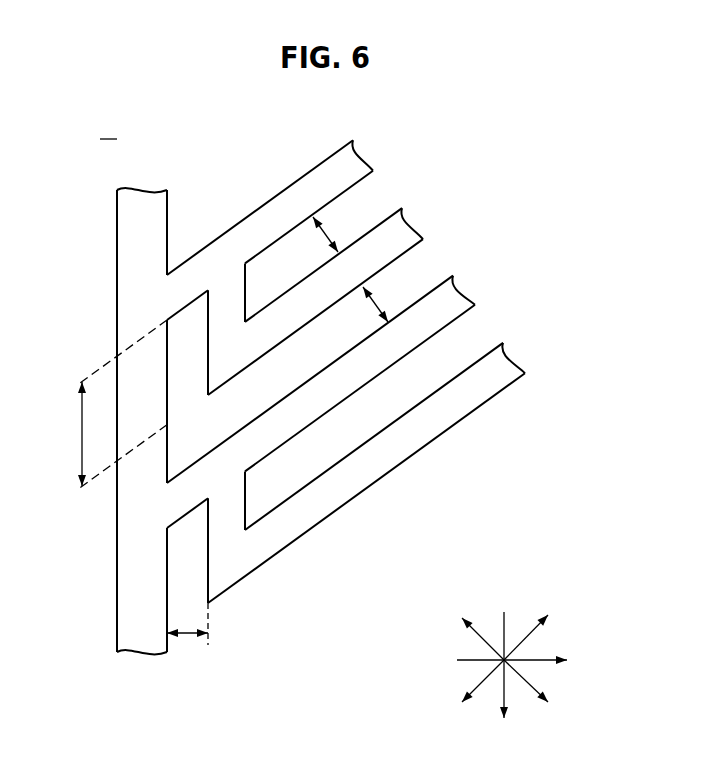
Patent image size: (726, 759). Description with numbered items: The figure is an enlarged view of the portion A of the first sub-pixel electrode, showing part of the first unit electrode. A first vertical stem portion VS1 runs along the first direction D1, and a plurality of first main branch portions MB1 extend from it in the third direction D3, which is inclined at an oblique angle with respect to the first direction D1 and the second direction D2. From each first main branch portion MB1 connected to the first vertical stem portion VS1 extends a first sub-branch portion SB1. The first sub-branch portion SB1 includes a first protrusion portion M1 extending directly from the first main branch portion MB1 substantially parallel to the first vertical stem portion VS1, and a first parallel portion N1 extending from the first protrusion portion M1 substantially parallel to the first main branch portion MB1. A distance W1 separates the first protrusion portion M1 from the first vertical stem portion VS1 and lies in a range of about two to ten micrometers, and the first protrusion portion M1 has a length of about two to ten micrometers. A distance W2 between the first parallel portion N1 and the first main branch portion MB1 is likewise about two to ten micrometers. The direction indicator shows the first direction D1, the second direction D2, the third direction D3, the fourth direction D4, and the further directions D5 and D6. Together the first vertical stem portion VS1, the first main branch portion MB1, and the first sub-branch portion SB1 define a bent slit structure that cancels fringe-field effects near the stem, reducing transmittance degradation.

The portion A is at (108, 128).
The first vertical stem portion VS1 is at (140, 300).
The first main branch portion MB1 is at (358, 158).
The first parallel portion N1 is at (406, 228).
The first protrusion portion M1 is at (232, 502).
The first sub-branch portion SB1 is at (301, 457).
The distance W1 is at (187, 648).
The distance W2 is at (357, 268).
The first direction D1 is at (505, 681).
The second direction D2 is at (525, 660).
The third direction D3 is at (536, 626).
The fourth direction D4 is at (538, 695).
The fifth direction D5 is at (473, 626).
The sixth direction D6 is at (469, 691).